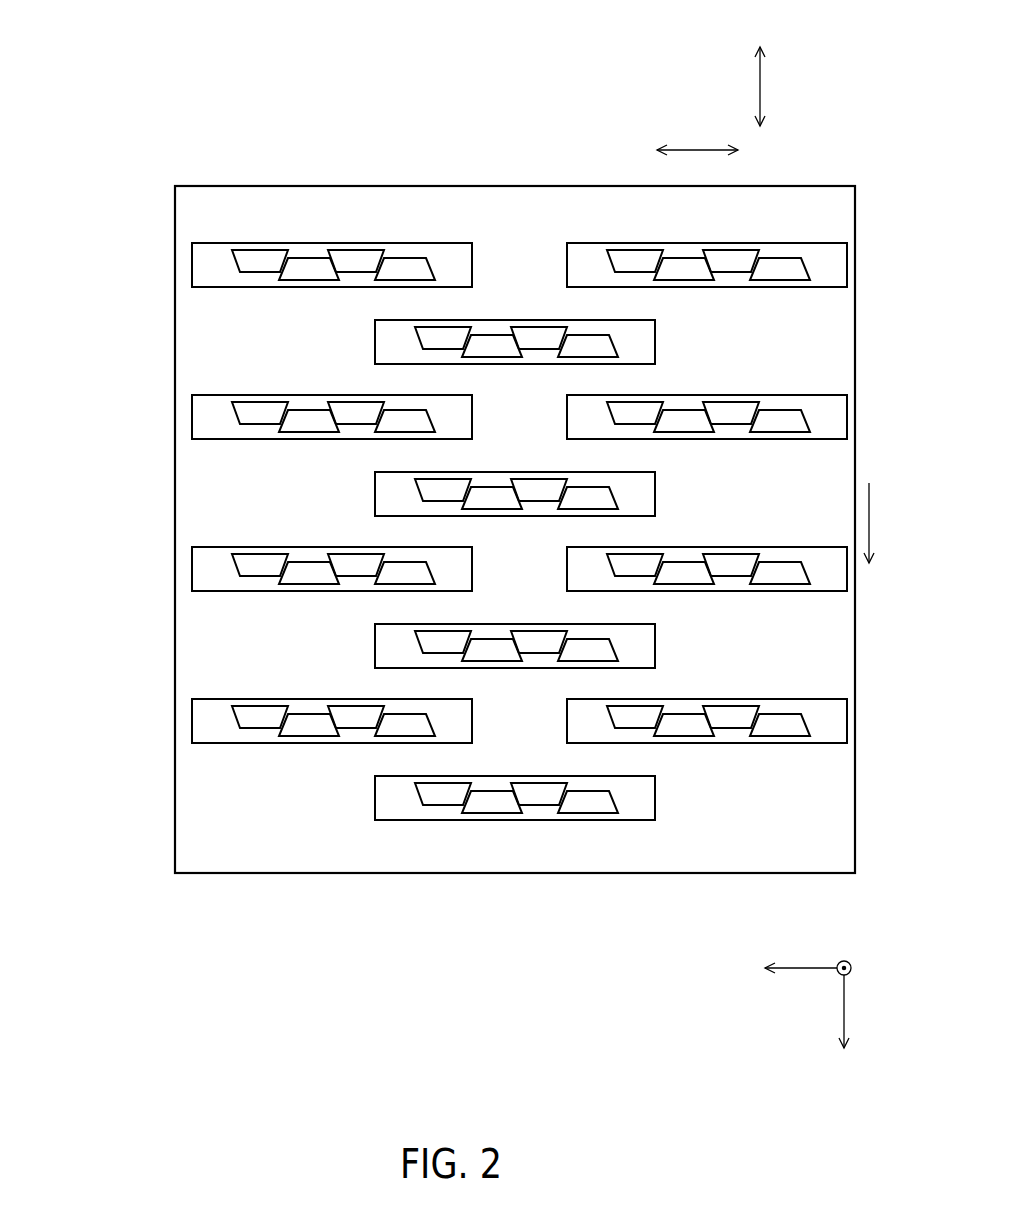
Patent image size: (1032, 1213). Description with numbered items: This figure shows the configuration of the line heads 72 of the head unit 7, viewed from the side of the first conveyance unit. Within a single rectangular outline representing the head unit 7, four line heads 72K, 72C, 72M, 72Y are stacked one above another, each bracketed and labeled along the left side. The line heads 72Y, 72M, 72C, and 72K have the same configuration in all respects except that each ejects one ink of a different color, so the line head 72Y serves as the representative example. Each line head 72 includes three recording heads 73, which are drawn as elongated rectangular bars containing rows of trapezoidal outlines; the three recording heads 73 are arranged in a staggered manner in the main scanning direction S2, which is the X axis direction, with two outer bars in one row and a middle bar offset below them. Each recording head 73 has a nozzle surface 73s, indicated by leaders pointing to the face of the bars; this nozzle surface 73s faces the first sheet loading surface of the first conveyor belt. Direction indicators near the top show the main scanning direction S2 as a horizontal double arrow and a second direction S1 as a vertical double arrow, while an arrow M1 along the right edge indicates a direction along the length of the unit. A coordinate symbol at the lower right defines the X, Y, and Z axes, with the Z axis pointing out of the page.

The head unit 7 is at (550, 108).
The line heads 72 is at (447, 531).
The line head 72K is at (165, 243).
The line head 72C is at (165, 395).
The line head 72M is at (165, 547).
The line head 72Y is at (447, 721).
The recording head 73 is at (320, 698).
The nozzle surface 73s is at (509, 728).
The first scanning direction S1 is at (762, 82).
The main scanning direction S2 is at (700, 148).
The medium conveying direction M1 is at (871, 510).
The X axis X is at (797, 967).
The Y axis Y is at (844, 1032).
The Z axis Z is at (850, 962).